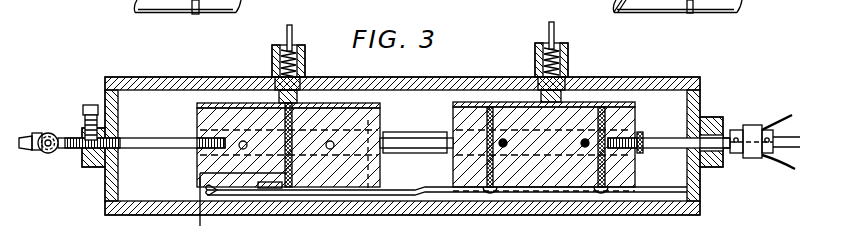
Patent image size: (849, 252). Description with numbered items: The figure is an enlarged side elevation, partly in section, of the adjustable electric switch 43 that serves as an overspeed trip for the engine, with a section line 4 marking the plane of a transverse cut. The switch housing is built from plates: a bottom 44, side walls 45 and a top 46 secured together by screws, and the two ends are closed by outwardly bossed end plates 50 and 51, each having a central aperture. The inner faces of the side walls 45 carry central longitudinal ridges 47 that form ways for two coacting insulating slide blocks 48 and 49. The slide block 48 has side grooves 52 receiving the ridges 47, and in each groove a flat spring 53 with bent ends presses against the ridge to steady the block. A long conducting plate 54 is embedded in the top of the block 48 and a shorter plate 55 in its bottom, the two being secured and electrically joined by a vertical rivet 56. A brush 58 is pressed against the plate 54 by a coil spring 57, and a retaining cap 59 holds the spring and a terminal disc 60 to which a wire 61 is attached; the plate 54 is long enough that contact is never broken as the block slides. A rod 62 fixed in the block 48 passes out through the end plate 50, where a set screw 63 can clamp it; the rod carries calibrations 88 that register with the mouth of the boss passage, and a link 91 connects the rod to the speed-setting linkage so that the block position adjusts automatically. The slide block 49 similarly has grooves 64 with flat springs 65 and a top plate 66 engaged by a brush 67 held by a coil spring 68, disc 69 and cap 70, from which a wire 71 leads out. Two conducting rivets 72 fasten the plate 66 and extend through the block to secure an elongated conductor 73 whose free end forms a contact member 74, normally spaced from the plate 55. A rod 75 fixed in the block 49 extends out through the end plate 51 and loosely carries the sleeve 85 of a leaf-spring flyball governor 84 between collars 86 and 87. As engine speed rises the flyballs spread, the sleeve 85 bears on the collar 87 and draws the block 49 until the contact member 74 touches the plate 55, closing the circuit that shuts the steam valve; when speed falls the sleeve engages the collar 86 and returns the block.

The section line 4- 4 is at (213, 226).
The adjustable electric switch 43 is at (99, 72).
The bottom 44 is at (517, 213).
The side walls 45 is at (666, 110).
The top 46 is at (395, 80).
The longitudinal ridges 47 is at (168, 150).
The slide block 48 is at (318, 122).
The slide block 49 is at (463, 101).
The bossed end plate 50 is at (105, 188).
The bossed end plate 51 is at (701, 88).
The grooves 52 is at (368, 188).
The flat spring 53 is at (196, 136).
The embedded plate 54 is at (222, 104).
The plate 55 is at (268, 189).
The vertical rivet 56 is at (300, 187).
The coil spring 57 is at (275, 62).
The brush 58 is at (300, 98).
The retaining cap 59 is at (300, 50).
The terminal disc 60 is at (286, 45).
The wire 61 is at (293, 35).
The rod 62 is at (70, 152).
The set screw 63 is at (83, 110).
The grooves 64 is at (465, 195).
The flat spring 65 is at (593, 93).
The embedded plate 66 is at (510, 101).
The brush 67 is at (573, 77).
The coil spring 68 is at (568, 66).
The disc 69 is at (540, 43).
The cap 70 is at (561, 44).
The wire 71 is at (553, 40).
The vertical rivets 72 is at (487, 119).
The elongated conductor 73 is at (396, 190).
The contact member 74 is at (210, 194).
The rod 75 is at (722, 140).
The flyball governor 84 is at (783, 113).
The sleeve 85 is at (751, 124).
The collar 86 is at (736, 129).
The collar 87 is at (773, 133).
The calibrations 88 is at (80, 140).
The link 91 is at (22, 151).